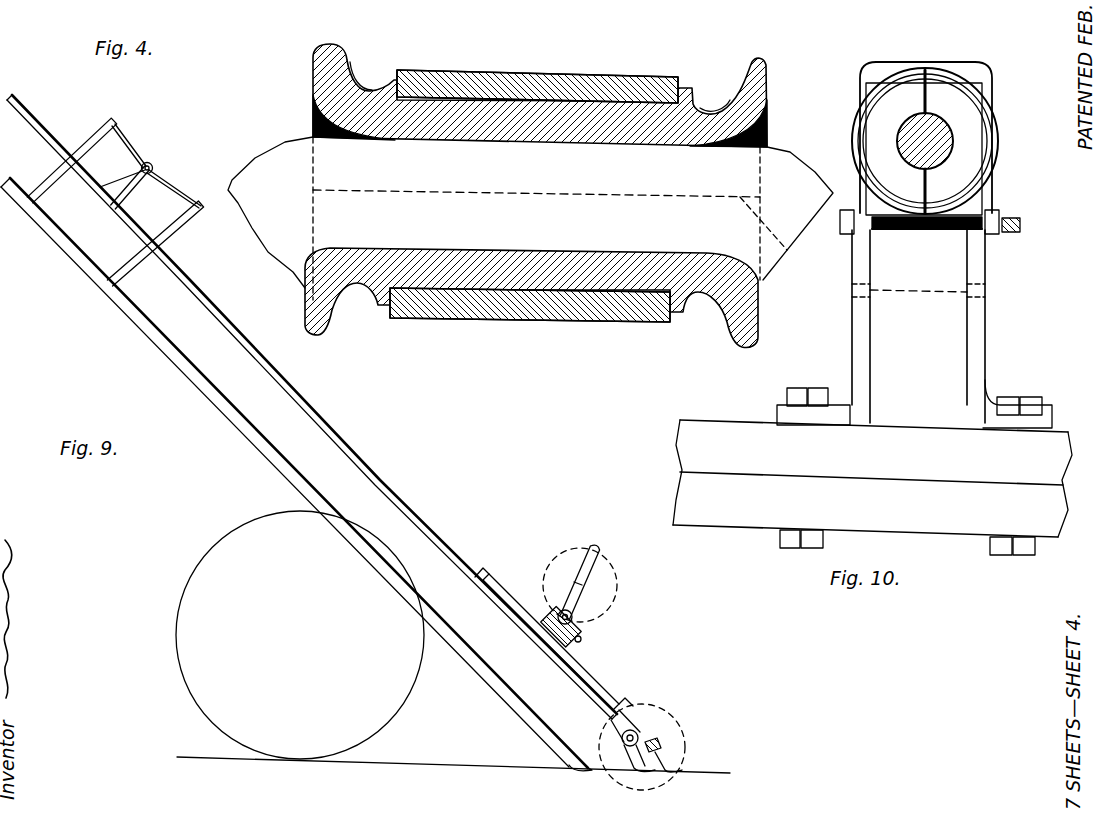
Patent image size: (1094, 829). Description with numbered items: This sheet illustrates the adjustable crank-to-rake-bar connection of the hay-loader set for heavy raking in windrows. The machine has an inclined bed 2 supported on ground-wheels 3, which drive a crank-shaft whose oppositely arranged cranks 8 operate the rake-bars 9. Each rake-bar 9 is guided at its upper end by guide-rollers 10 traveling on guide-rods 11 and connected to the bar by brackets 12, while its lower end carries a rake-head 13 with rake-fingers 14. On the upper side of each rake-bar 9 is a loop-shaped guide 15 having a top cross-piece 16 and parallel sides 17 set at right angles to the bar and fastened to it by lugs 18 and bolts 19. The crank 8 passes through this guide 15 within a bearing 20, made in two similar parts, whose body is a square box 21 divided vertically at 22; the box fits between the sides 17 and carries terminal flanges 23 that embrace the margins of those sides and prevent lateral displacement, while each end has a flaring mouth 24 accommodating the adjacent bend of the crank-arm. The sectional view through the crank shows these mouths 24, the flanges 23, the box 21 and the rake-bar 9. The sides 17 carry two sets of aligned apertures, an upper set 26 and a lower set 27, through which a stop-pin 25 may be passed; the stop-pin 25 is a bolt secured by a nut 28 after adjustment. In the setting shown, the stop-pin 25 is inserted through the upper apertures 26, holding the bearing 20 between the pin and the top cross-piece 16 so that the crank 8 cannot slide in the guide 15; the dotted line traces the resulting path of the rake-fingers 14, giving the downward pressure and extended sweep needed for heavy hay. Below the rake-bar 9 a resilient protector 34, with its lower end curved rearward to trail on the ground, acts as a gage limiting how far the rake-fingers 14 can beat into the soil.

In FIG. 9, the inclined bed 2 is at (150, 340).
In FIG. 9, the ground-wheels 3 is at (192, 568).
In FIG. 4, the crank 8 is at (280, 165).
In FIG. 10, the crank 8 is at (950, 138).
In FIG. 9, the crank 8 is at (592, 548).
In FIG. 10, the rake-bar 9 is at (740, 517).
In FIG. 9, the rake-bar 9 is at (454, 545).
In FIG. 9, the guide-rollers 10 is at (153, 168).
In FIG. 9, the guide-rods 11 is at (126, 152).
In FIG. 9, the brackets 12 is at (128, 208).
In FIG. 9, the rake-head 13 is at (620, 735).
In FIG. 9, the rake-fingers 14 is at (640, 765).
In FIG. 4, the guide 15 is at (447, 314).
In FIG. 10, the guide 15 is at (988, 268).
In FIG. 9, the guide 15 is at (568, 648).
In FIG. 10, the top cross-piece 16 is at (862, 70).
In FIG. 4, the parallel sides 17 is at (530, 72).
In FIG. 10, the parallel sides 17 is at (853, 320).
In FIG. 10, the lugs 18 is at (777, 410).
In FIG. 10, the bolts 19 is at (810, 395).
In FIG. 4, the bearing 20 is at (585, 294).
In FIG. 10, the bearing 20 is at (858, 118).
In FIG. 9, the bearing 20 is at (555, 637).
In FIG. 4, the square box 21 is at (520, 292).
In FIG. 10, the square box 21 is at (884, 232).
In FIG. 4, the vertical division 22 is at (770, 230).
In FIG. 10, the vertical division 22 is at (948, 225).
In FIG. 4, the terminal flanges 23 is at (385, 76).
In FIG. 10, the terminal flanges 23 is at (868, 96).
In FIG. 4, the flaring mouth 24 is at (765, 75).
In FIG. 10, the flaring mouth 24 is at (997, 150).
In FIG. 10, the stop-pin 25 is at (1000, 214).
In FIG. 9, the stop-pin 25 is at (582, 640).
In FIG. 10, the upper set of apertures 26 is at (962, 248).
In FIG. 10, the lower set of apertures 27 is at (918, 296).
In FIG. 10, the nut 28 is at (1012, 232).
In FIG. 9, the protector 34 is at (678, 752).